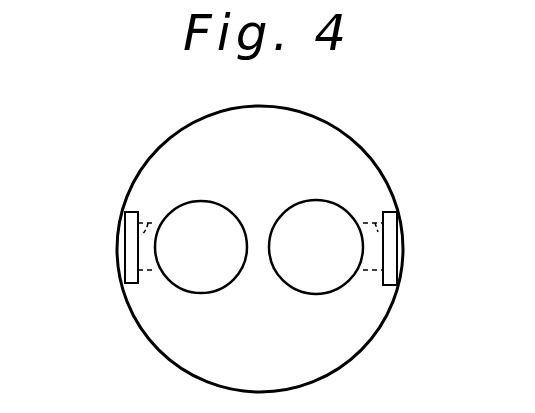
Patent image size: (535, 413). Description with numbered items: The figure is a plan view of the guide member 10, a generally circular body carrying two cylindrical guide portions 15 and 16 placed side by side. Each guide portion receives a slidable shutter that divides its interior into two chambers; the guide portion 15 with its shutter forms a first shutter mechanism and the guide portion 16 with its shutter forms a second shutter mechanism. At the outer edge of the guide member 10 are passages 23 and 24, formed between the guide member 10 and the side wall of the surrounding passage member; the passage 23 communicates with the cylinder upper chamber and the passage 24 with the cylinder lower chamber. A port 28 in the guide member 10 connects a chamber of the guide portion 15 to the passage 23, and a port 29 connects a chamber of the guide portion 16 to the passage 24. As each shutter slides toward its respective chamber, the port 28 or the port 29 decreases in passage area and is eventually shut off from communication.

The guide member 10 is at (382, 157).
The guide portion 15 is at (327, 225).
The guide portion 16 is at (197, 217).
The passage 23 is at (402, 276).
The passage 24 is at (132, 278).
The port 28 is at (400, 235).
The port 29 is at (140, 240).